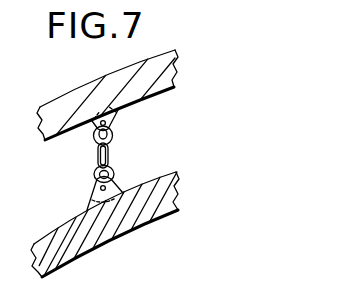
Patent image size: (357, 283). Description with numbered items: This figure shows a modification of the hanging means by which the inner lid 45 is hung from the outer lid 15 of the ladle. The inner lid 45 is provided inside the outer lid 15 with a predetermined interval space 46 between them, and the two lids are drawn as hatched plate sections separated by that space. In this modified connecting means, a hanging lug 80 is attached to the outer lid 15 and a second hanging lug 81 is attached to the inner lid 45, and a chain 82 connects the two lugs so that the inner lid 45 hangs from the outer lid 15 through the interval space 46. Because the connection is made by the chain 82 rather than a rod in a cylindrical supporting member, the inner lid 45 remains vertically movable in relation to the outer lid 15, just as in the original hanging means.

The outer lid 15 is at (94, 100).
The hanging lug 80 is at (118, 109).
The chain 82 is at (108, 153).
The hanging lug 81 is at (117, 193).
The inner lid 45 is at (138, 218).
The interval space 46 is at (79, 158).